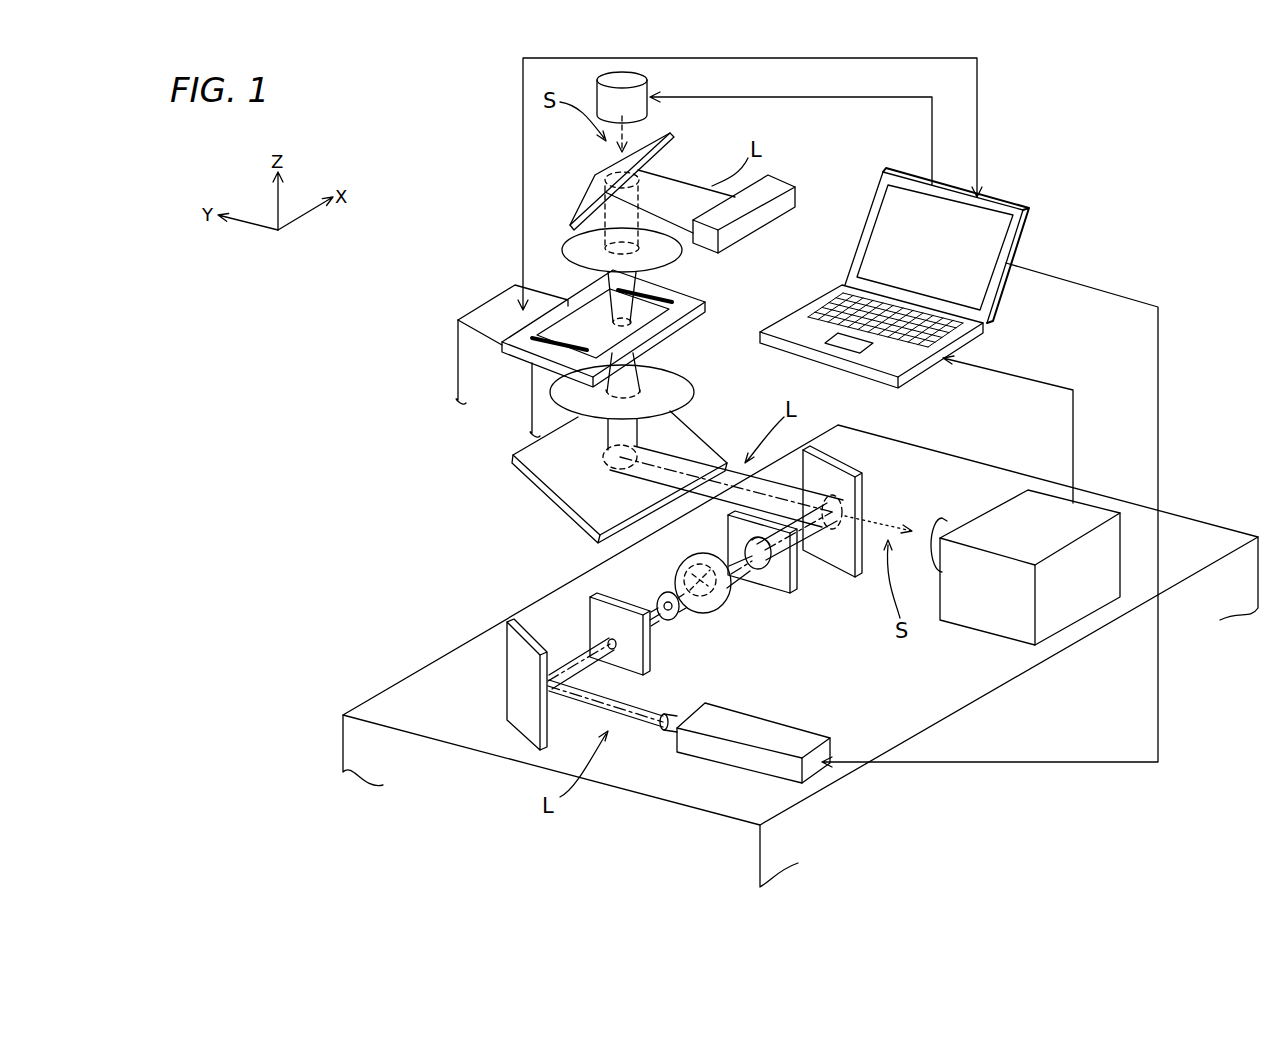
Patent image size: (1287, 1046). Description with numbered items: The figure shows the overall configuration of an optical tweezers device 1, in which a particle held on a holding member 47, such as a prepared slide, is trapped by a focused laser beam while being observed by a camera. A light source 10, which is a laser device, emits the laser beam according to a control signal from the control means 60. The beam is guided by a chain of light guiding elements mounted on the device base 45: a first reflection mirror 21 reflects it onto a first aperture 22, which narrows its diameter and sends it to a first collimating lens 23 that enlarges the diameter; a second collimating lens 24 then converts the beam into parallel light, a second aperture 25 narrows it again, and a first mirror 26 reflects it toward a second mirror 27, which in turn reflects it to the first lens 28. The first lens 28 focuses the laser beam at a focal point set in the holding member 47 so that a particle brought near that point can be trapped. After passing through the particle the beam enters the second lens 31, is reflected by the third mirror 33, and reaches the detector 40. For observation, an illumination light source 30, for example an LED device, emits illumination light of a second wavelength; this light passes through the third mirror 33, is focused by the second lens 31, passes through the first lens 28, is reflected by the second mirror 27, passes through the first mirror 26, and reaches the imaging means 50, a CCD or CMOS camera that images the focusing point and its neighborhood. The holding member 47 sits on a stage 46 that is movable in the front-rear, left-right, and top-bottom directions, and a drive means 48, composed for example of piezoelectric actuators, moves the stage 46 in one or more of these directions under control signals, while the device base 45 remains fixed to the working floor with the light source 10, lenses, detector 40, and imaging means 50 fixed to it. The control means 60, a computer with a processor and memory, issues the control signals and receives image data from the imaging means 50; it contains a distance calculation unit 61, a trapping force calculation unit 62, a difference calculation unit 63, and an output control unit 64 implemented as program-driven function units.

The optical tweezers device 1 is at (1156, 121).
The light source 10 is at (768, 733).
The first reflection mirror 21 is at (513, 673).
The first aperture 22 is at (652, 655).
The first collimating lens 23 is at (682, 617).
The second collimating lens 24 is at (723, 602).
The second aperture 25 is at (793, 580).
The first mirror 26 is at (863, 497).
The second mirror 27 is at (560, 500).
The first lens 28 is at (680, 386).
The illumination light source 30 is at (652, 110).
The second lens 31 is at (578, 242).
The third mirror 33 is at (595, 176).
The detector 40 is at (777, 180).
The device base 45 is at (402, 695).
The stage 46 is at (518, 354).
The holding member 47 is at (680, 294).
The drive means 48 is at (493, 308).
The imaging means 50 is at (1000, 613).
The control means 60 is at (1018, 240).
The distance calculation unit 61 is at (975, 405).
The trapping force calculation unit 62 is at (975, 405).
The difference calculation unit 63 is at (975, 405).
The output control unit 64 is at (920, 365).